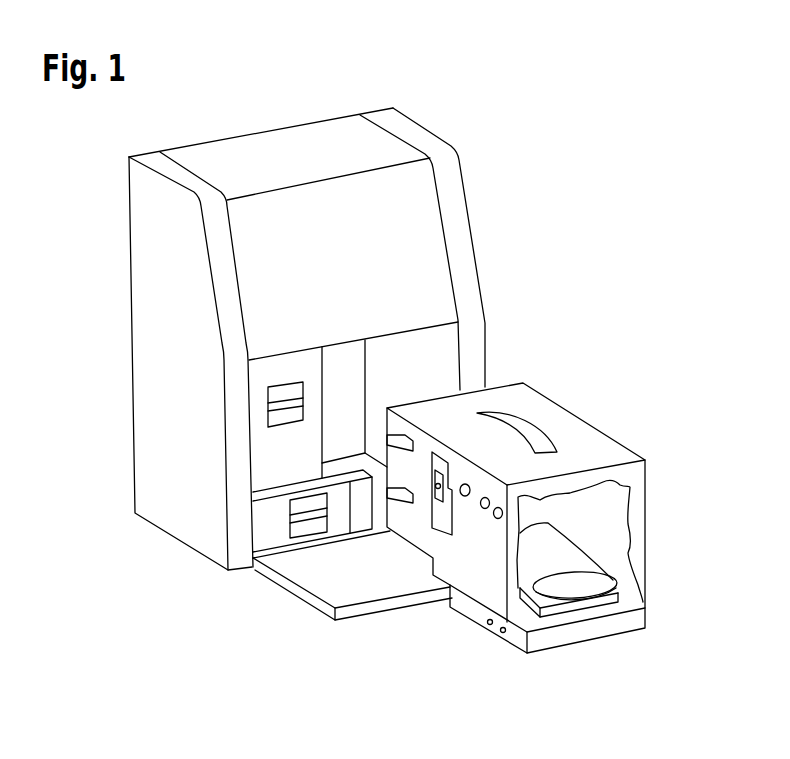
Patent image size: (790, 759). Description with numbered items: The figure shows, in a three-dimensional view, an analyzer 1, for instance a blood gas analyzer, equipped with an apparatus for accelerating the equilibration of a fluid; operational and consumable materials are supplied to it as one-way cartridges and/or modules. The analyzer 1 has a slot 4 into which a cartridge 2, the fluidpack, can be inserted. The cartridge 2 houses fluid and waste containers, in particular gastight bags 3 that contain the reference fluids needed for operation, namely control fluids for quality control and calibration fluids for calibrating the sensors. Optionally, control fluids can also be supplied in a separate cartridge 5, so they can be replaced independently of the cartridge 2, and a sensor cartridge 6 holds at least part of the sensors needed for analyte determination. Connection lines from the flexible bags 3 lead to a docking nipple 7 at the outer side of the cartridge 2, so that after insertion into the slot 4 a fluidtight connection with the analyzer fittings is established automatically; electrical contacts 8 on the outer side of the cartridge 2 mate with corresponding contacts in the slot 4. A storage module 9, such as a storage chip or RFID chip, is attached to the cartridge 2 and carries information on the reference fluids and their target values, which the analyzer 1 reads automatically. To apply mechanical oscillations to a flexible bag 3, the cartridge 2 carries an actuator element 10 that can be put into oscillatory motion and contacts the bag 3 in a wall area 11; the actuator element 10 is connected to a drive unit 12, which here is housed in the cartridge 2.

The analyzer 1 is at (302, 101).
The cartridge 2 is at (553, 417).
The gastight bag 3 is at (555, 565).
The slot 4 is at (433, 351).
The separate cartridge 5 is at (280, 513).
The sensor cartridge 6 is at (280, 399).
The docking nipple 7 is at (465, 496).
The electrical contacts 8 is at (490, 625).
The storage module 9 is at (436, 486).
The actuator element 10 is at (602, 603).
The wall area 11 is at (582, 593).
The drive unit 12 is at (570, 633).